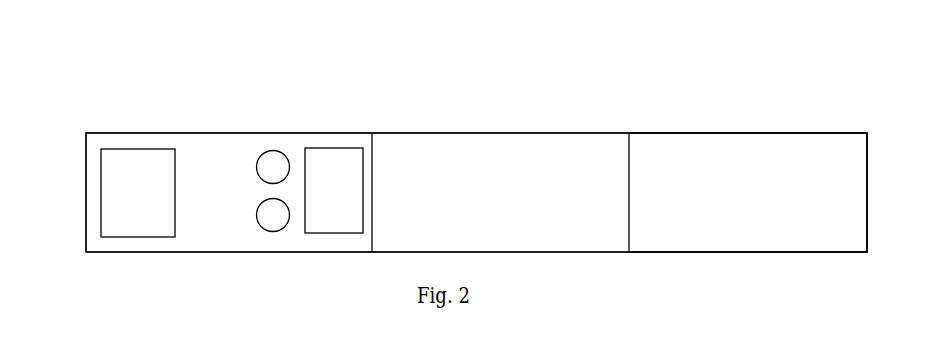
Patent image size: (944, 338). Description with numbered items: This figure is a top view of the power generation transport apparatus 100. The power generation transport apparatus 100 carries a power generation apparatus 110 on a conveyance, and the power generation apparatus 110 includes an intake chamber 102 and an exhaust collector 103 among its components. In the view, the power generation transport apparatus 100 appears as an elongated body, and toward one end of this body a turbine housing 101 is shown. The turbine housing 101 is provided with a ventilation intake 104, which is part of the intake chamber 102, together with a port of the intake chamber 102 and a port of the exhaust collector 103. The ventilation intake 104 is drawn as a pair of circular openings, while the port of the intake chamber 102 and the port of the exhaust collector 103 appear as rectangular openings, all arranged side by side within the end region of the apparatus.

The power generation transport apparatus 100 is at (493, 105).
The power generation apparatus 110 is at (476, 192).
The turbine housing 101 is at (642, 118).
The intake chamber 102 is at (100, 192).
The exhaust collector 103 is at (333, 145).
The ventilation intake 104 is at (273, 145).